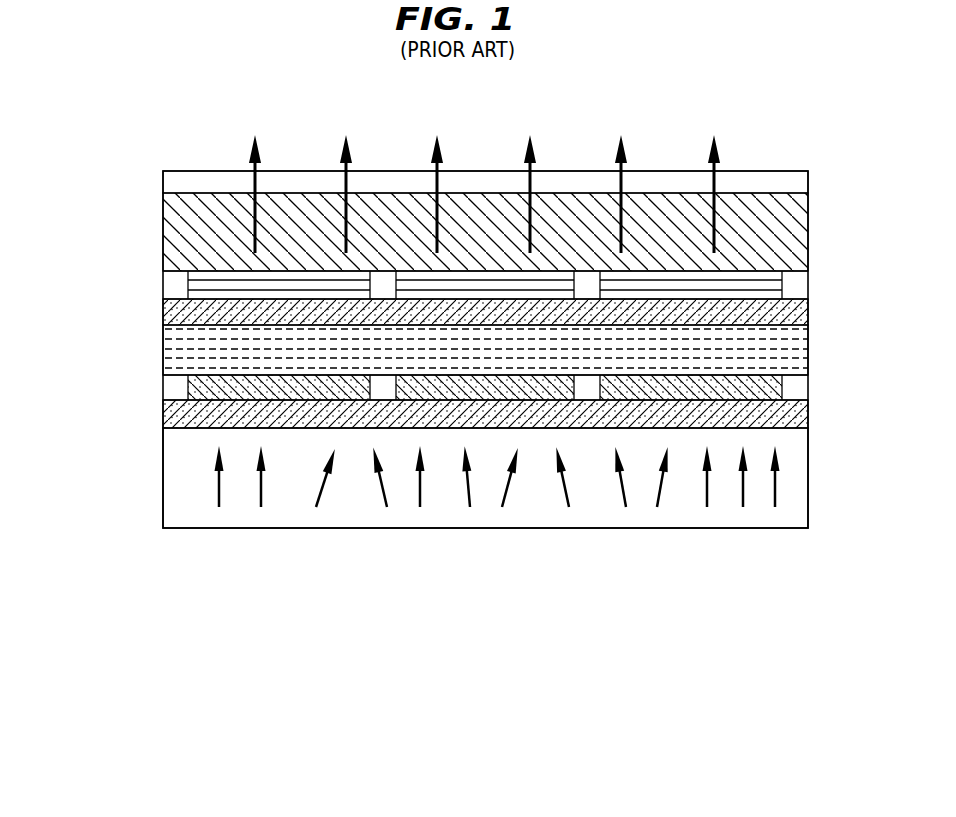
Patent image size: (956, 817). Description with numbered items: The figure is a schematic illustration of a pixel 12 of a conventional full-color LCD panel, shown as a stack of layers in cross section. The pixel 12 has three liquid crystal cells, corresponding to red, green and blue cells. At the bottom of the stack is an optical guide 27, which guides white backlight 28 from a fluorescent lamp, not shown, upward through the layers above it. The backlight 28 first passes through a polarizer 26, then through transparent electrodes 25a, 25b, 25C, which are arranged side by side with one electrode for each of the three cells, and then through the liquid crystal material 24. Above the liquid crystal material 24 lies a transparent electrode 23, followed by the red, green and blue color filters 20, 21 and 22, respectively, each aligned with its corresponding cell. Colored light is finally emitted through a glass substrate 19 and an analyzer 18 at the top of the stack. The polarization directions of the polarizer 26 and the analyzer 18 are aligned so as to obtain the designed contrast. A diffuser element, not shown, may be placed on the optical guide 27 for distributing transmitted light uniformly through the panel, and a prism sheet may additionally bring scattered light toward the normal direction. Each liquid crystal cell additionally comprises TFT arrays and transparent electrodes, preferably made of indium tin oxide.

The pixel 12 is at (118, 110).
The analyzer 18 is at (795, 180).
The glass substrate 19 is at (792, 238).
The red color filter 20 is at (205, 291).
The green color filter 21 is at (481, 283).
The blue color filter 22 is at (744, 285).
The transparent electrode 23 is at (800, 313).
The liquid crystal material 24 is at (808, 341).
The transparent electrode 25a is at (208, 397).
The transparent electrode 25b is at (460, 385).
The transparent electrode 25C is at (765, 393).
The polarizer 26 is at (178, 418).
The optical guide 27 is at (800, 480).
The white backlight 28 is at (707, 490).